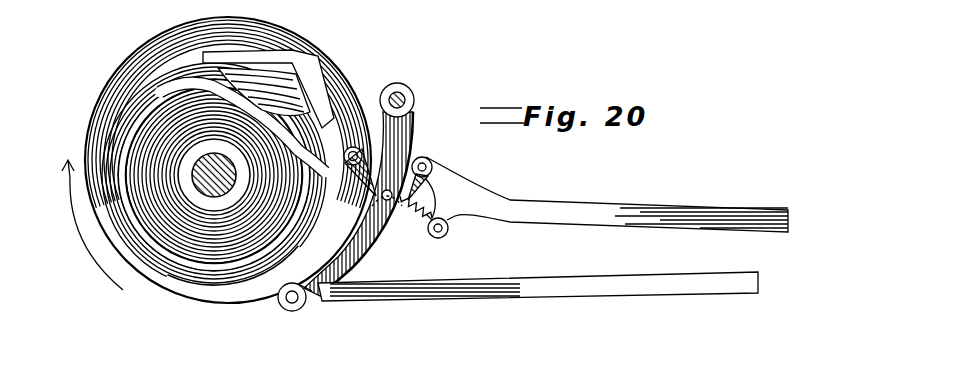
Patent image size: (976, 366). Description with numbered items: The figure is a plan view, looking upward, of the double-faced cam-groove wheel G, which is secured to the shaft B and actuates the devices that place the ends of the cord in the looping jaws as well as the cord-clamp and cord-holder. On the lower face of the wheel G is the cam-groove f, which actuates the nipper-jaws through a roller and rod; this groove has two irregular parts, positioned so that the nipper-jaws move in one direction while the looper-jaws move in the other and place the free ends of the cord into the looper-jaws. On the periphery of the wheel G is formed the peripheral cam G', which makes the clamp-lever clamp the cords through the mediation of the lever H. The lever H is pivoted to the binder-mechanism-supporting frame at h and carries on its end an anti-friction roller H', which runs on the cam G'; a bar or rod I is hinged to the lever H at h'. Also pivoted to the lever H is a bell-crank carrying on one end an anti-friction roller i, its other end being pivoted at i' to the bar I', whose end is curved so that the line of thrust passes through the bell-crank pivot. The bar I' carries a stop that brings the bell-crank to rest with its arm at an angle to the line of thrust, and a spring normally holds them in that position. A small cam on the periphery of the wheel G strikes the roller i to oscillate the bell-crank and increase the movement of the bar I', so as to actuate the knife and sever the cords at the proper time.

The double-faced cam-groove wheel G is at (228, 169).
The peripheral cam G' is at (268, 72).
The cam-groove f is at (113, 129).
The shaft B is at (201, 189).
The lever H is at (358, 204).
The anti-friction roller H' is at (296, 307).
The pivot of lever H h is at (408, 100).
The hinge of bar I h' is at (315, 309).
The anti-friction roller i is at (360, 164).
The pivot of bar I' i' is at (433, 175).
The bar I' is at (606, 194).
The bar or rod I is at (538, 287).